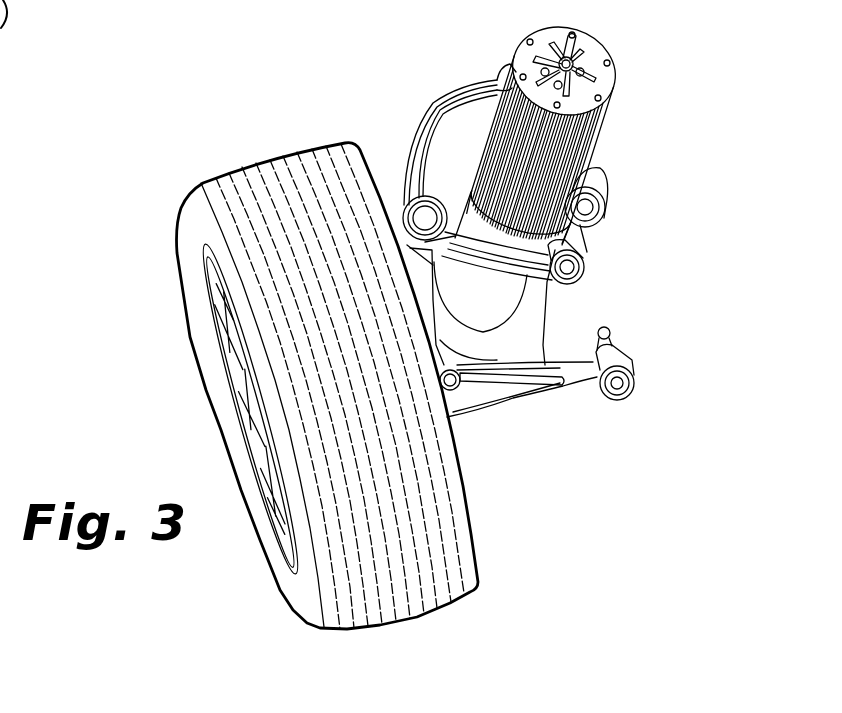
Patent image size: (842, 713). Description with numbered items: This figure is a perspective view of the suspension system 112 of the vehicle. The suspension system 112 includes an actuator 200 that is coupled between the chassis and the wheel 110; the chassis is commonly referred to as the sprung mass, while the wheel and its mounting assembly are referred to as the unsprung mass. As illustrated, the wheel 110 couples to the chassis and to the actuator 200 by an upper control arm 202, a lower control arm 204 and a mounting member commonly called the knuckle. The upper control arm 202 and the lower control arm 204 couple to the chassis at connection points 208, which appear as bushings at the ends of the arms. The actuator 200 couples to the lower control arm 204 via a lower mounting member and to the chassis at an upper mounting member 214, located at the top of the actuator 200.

The wheel 110 is at (272, 160).
The suspension system 112 is at (404, 74).
The actuator 200 is at (590, 45).
The upper control arm 202 is at (418, 137).
The lower control arm 204 is at (527, 402).
The connection points 208 is at (497, 78).
The upper mounting member 214 is at (528, 38).